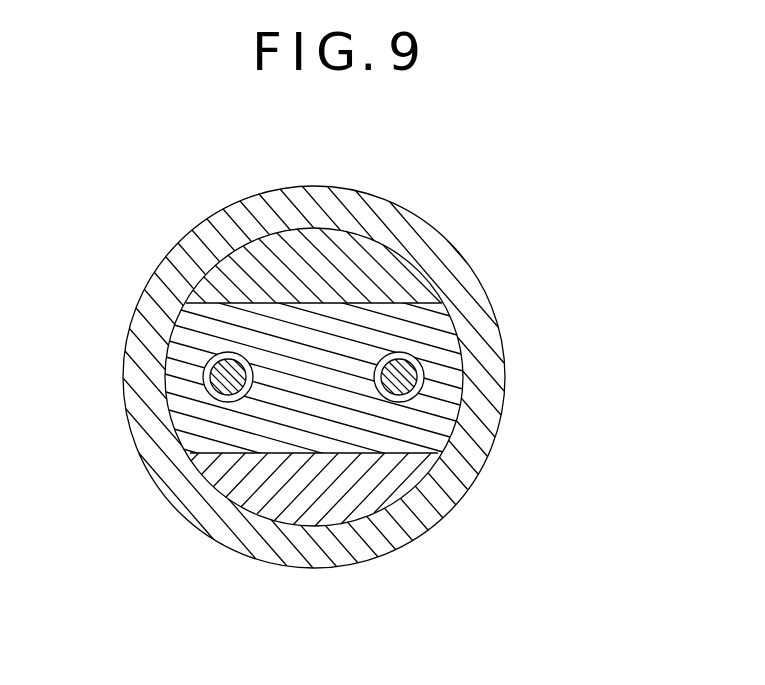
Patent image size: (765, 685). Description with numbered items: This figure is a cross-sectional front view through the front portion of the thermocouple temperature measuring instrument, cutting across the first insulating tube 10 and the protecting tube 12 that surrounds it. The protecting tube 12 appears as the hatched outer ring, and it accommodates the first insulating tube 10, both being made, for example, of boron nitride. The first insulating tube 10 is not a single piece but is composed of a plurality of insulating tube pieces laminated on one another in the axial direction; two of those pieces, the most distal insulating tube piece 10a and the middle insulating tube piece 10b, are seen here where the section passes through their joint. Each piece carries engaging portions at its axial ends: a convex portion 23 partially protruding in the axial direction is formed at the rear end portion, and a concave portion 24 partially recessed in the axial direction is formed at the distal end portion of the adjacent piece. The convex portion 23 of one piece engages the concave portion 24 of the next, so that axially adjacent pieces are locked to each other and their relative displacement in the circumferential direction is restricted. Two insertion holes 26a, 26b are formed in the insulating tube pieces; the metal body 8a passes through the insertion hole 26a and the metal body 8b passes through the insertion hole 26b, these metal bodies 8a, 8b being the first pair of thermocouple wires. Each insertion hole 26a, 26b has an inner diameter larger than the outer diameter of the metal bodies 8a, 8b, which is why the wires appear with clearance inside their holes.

The metal body 8a is at (482, 453).
The metal body 8b is at (210, 377).
The first insulating tube 10 is at (347, 234).
The insulating tube piece 10a is at (437, 333).
The insulating tube piece 10b is at (305, 258).
The protecting tube 12 is at (486, 292).
The convex portion 23 is at (369, 458).
The concave portion 24 is at (219, 302).
The insertion hole 26a is at (382, 397).
The insertion hole 26b is at (238, 400).